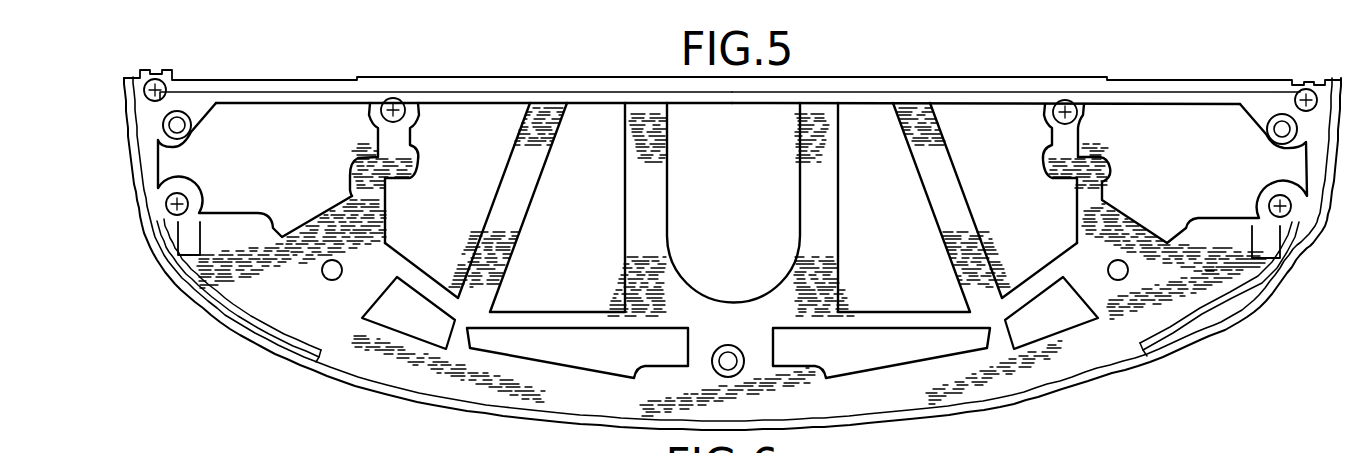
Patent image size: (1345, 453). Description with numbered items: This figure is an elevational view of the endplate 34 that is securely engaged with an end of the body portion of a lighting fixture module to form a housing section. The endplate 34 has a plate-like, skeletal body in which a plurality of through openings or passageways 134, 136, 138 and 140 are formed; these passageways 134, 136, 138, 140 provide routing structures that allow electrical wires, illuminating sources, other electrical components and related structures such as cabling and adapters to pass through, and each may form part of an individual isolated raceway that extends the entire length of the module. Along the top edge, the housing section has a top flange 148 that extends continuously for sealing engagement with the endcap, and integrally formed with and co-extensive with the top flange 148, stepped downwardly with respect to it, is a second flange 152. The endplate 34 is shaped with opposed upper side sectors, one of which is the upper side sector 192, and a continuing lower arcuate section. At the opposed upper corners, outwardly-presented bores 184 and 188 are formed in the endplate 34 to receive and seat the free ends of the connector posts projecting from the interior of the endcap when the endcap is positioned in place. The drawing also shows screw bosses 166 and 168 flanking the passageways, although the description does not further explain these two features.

The endplate 34 is at (271, 374).
The passageway 134 is at (578, 132).
The passageway 136 is at (467, 128).
The passageway 138 is at (252, 140).
The passageway 140 is at (773, 133).
The top flange 148 is at (969, 90).
The second flange 152 is at (305, 99).
The screw boss 166 is at (403, 104).
The screw boss 168 is at (1078, 104).
The bore 184 is at (1287, 80).
The bore 188 is at (171, 68).
The upper side sector 192 is at (1261, 305).